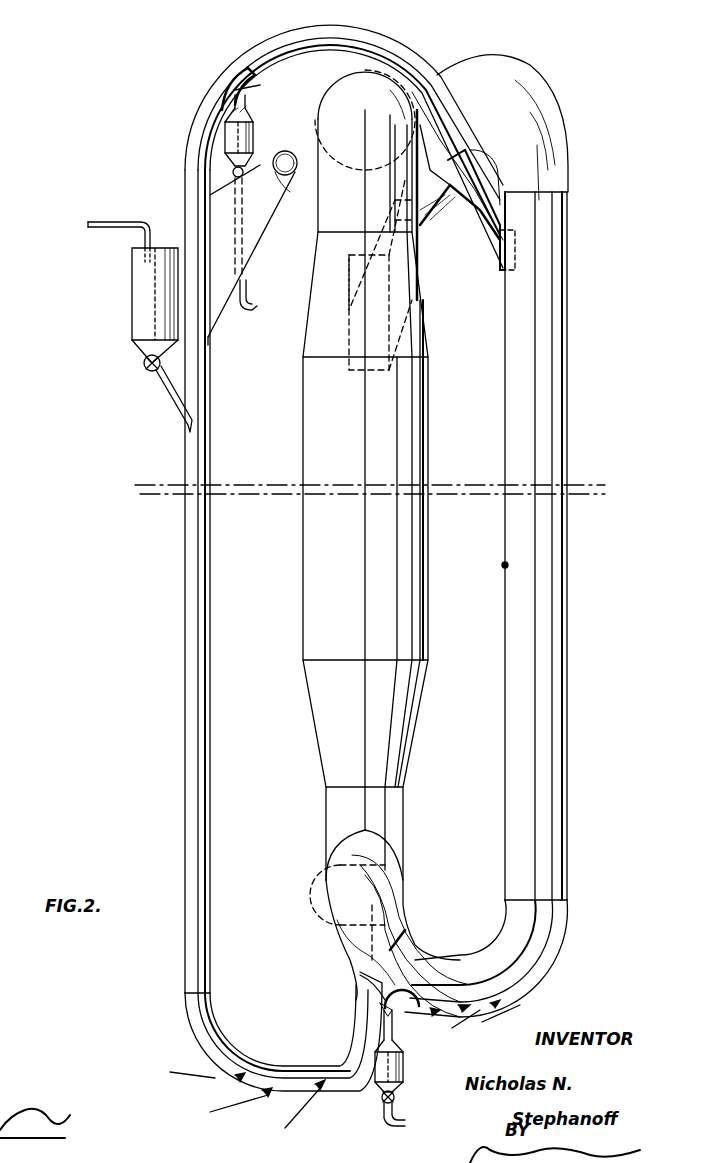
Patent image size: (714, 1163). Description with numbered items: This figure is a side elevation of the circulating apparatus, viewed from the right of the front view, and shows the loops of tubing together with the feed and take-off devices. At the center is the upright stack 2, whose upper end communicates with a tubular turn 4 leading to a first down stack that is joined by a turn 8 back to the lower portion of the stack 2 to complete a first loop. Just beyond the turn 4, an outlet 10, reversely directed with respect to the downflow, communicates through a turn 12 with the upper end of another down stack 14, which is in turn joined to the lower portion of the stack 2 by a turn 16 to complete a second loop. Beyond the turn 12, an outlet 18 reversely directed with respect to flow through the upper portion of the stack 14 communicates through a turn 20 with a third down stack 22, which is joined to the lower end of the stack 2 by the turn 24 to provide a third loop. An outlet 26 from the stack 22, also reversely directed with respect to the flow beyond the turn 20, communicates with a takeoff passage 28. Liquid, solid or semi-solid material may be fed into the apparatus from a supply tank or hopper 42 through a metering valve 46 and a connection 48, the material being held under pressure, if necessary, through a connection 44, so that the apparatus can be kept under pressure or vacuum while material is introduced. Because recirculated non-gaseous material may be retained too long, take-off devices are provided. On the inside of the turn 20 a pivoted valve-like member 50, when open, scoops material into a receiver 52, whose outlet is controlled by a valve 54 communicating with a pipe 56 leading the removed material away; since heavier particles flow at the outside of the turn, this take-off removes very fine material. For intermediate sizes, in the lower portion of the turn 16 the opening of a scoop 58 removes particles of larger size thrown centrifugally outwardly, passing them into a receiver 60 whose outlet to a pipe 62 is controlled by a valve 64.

The upright stack 2 is at (420, 582).
The tubular turn 4 is at (345, 92).
The turn 8 is at (402, 898).
The outlet 10 is at (400, 318).
The turn 12 is at (515, 72).
The down stack 14 is at (568, 320).
The turn 16 is at (553, 966).
The outlet 18 is at (487, 228).
The turn 20 is at (383, 44).
The down stack 22 is at (184, 585).
The turn 24 is at (265, 1080).
The outlet 26 is at (263, 232).
The takeoff passage 28 is at (287, 151).
The supply tank or hopper 42 is at (135, 285).
The connection 44 is at (113, 224).
The metering valve 46 is at (144, 363).
The connection 48 is at (168, 397).
The pivoted valve-like member 50 is at (232, 90).
The receiver 52 is at (250, 125).
The valve 54 is at (226, 174).
The pipe 56 is at (250, 300).
The scoop 58 is at (402, 1000).
The receiver 60 is at (403, 1060).
The pipe 62 is at (383, 1118).
The valve 64 is at (382, 1097).